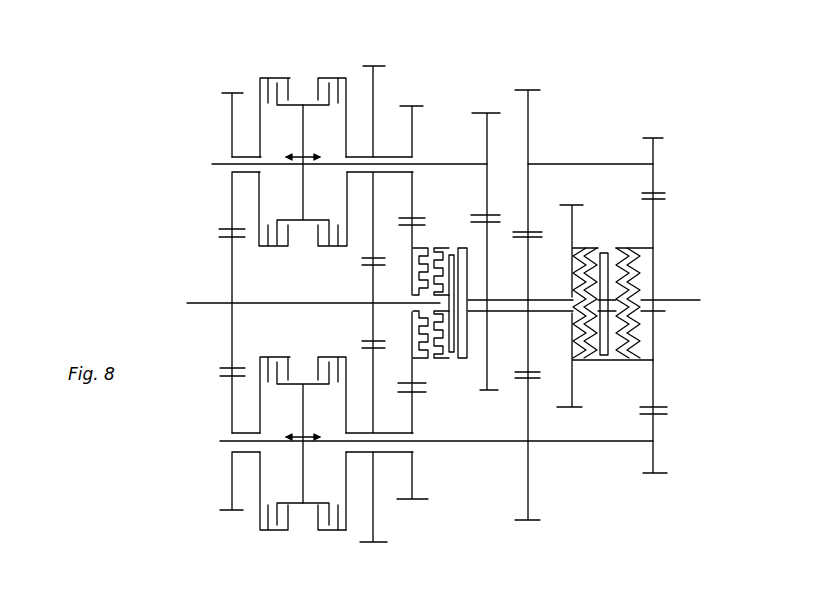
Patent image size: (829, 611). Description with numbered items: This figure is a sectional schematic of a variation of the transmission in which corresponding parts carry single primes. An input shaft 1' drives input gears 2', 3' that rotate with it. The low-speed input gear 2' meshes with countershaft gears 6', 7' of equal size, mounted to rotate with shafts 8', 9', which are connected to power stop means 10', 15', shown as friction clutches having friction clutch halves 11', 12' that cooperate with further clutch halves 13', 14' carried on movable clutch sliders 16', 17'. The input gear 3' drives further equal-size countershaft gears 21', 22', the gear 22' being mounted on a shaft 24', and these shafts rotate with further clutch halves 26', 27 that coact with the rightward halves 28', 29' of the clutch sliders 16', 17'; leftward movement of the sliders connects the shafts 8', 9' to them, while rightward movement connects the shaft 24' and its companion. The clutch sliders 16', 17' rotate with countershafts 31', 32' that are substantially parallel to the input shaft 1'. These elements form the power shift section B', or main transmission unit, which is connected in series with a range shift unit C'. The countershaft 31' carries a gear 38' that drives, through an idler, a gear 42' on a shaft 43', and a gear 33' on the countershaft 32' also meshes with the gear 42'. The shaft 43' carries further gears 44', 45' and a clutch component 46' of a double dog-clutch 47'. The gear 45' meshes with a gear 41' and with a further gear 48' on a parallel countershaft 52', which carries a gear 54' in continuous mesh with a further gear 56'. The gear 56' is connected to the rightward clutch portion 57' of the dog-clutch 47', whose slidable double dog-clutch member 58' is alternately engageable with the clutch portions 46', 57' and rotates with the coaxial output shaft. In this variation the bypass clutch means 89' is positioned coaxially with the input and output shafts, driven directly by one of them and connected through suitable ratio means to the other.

The input shaft 1' is at (306, 320).
The low-speed input gear 2' is at (239, 302).
The input gear 3' is at (374, 259).
The countershaft gear 6' is at (214, 125).
The countershaft gear 7' is at (220, 452).
The shaft 8' is at (246, 136).
The shaft 9' is at (246, 412).
The power stop means 10' is at (280, 38).
The power shift section B' is at (340, 40).
The friction clutch half 11' is at (295, 115).
The friction clutch half 12' is at (278, 491).
The clutch half 13' is at (250, 97).
The clutch half 14' is at (274, 374).
The power stop means 15' is at (299, 538).
The clutch slider 16' is at (308, 175).
The clutch slider 17' is at (308, 432).
The countershaft gear 21' is at (383, 237).
The countershaft gear 22' is at (393, 498).
The shaft 24' is at (347, 395).
The clutch half 26' is at (347, 117).
The clutch half 27 is at (348, 508).
The rightward half of clutch slider 28' is at (303, 209).
The rightward half of clutch slider 29' is at (329, 495).
The countershaft 31' is at (432, 309).
The countershaft 32' is at (374, 429).
The gear 33' is at (556, 302).
The gear 38' is at (474, 251).
The gear 41' is at (544, 440).
The gear 42' is at (477, 229).
The shaft 43' is at (584, 284).
The gear 44' is at (537, 256).
The gear 45' is at (595, 306).
The clutch component 46' is at (589, 280).
The double dog-clutch 47' is at (611, 261).
The gear 48' is at (543, 305).
The countershaft 52' is at (590, 132).
The gear 54' is at (675, 249).
The gear 56' is at (673, 388).
The rightward clutch portion 57' is at (656, 234).
The double dog-clutch member 58' is at (632, 280).
The bypass clutch means 89' is at (440, 265).
The range shift unit C' is at (581, 58).